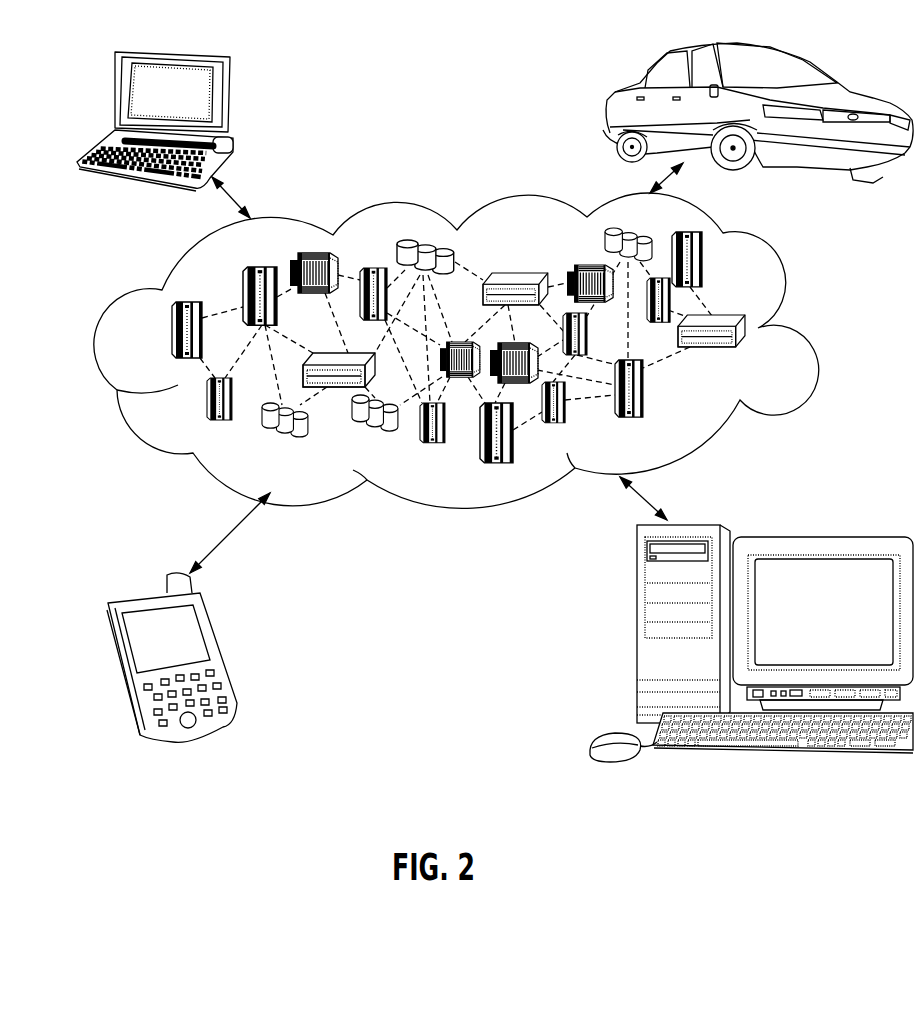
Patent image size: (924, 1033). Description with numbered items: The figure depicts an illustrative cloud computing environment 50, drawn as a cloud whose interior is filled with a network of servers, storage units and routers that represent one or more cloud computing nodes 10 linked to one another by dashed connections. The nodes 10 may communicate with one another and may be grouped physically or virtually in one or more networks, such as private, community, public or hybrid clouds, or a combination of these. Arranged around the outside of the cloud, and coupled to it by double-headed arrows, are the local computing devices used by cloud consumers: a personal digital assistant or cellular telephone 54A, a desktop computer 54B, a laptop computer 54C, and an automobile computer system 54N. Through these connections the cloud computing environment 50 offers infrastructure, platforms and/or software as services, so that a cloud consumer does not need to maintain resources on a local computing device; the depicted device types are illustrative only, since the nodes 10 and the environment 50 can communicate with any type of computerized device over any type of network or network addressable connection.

The cloud computing node 10 is at (770, 354).
The cloud computing environment 50 is at (790, 292).
The personal digital assistant (PDA) or cellular telephone 54A is at (220, 657).
The desktop computer 54B is at (633, 635).
The laptop computer 54C is at (228, 97).
The automobile computer system 54N is at (607, 101).